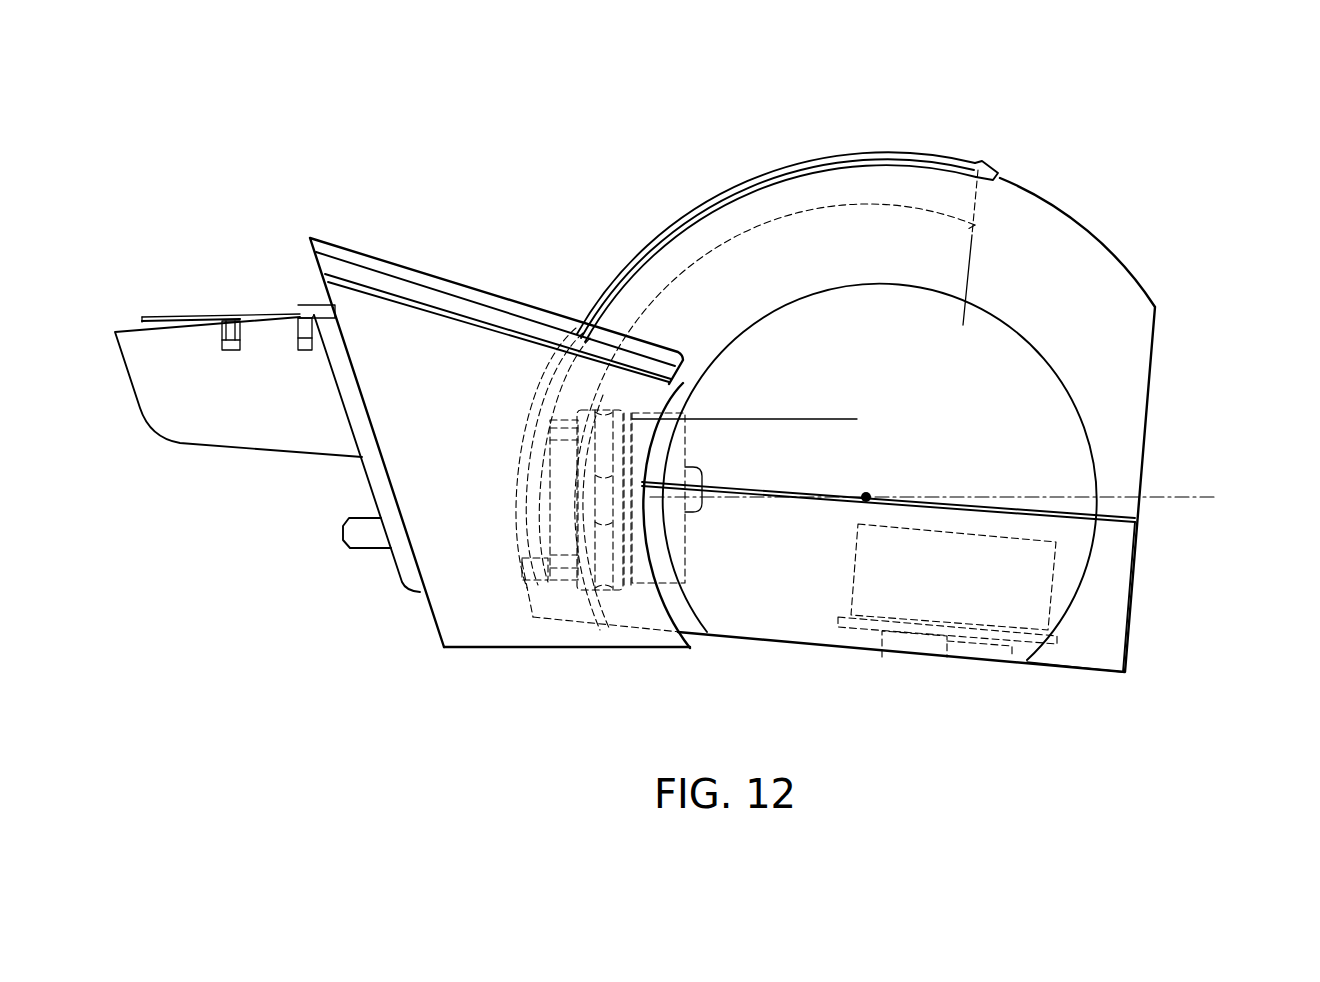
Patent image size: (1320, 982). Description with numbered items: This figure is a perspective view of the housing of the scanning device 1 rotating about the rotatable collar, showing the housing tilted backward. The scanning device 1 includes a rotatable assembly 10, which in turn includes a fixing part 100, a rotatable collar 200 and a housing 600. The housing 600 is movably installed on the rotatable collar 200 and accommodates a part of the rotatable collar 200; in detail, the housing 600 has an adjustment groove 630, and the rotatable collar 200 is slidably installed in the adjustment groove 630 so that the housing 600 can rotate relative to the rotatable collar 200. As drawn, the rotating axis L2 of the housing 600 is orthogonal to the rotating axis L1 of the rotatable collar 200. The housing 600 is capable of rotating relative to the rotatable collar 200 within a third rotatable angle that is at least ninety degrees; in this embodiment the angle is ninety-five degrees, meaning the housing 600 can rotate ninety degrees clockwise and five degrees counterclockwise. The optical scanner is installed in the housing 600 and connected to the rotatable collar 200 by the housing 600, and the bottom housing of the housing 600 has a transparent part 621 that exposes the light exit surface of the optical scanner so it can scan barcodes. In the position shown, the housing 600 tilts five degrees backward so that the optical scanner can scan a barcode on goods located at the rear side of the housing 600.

The scanning device 1 is at (208, 137).
The rotatable assembly 10 is at (585, 188).
The fixing part 100 is at (440, 268).
The rotatable collar 200 is at (590, 537).
The housing 600 is at (1120, 257).
The transparent part 621 is at (950, 645).
The adjustment groove 630 is at (778, 163).
The rotating axis of the rotatable collar L1 is at (958, 497).
The rotating axis of the housing L2 is at (888, 491).